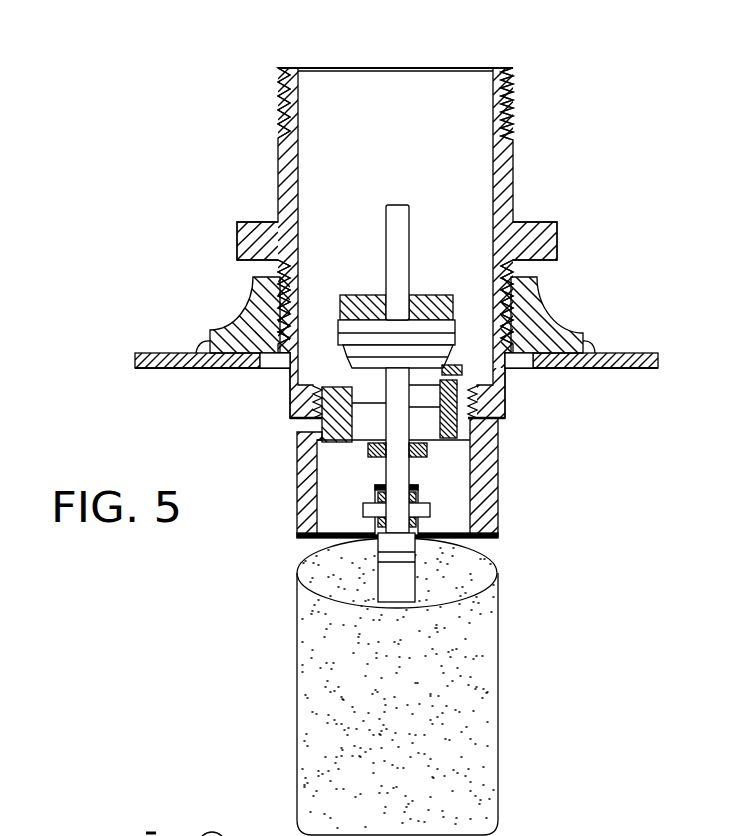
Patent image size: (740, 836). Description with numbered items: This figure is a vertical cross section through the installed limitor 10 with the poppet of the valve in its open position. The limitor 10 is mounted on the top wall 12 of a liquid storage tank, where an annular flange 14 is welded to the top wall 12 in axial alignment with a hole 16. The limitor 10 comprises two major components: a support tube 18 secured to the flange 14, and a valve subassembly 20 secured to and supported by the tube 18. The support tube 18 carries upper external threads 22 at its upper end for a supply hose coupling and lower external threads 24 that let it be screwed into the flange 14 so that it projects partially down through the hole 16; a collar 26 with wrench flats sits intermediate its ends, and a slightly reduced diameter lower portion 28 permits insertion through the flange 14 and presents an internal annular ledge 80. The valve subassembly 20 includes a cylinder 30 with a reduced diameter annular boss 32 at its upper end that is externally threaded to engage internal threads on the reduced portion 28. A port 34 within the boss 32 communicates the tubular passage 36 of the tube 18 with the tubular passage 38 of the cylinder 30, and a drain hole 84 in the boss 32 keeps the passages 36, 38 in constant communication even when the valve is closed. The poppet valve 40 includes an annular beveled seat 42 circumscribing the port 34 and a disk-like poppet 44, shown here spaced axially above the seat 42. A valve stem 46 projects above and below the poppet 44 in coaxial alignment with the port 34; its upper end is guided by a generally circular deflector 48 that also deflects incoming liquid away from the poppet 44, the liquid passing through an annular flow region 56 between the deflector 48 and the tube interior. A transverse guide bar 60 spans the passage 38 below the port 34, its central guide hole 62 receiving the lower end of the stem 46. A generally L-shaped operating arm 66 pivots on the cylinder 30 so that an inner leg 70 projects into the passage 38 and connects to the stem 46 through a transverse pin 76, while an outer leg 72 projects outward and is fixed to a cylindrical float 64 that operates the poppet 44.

The limitor 10 is at (442, 277).
The top wall 12 is at (645, 352).
The annular flange 14 is at (560, 318).
The hole 16 is at (517, 382).
The support tube 18 is at (516, 180).
The valve subassembly 20 is at (411, 488).
The upper external threads 22 is at (513, 88).
The lower external threads 24 is at (538, 283).
The collar 26 is at (557, 240).
The reduced diameter lower portion 28 is at (292, 376).
The cylinder 30 is at (300, 515).
The annular boss 32 is at (322, 397).
The port 34 is at (365, 418).
The tubular passage 36 is at (448, 90).
The tubular passage 38 is at (345, 528).
The poppet valve 40 is at (462, 352).
The beveled seat 42 is at (437, 388).
The poppet 44 is at (425, 333).
The valve stem 46 is at (395, 215).
The deflector 48 is at (346, 300).
The annular flow region 56 is at (316, 310).
The guide bar 60 is at (370, 447).
The guide hole 62 is at (382, 478).
The float 64 is at (490, 718).
The operating arm 66 is at (420, 562).
The inner leg 70 is at (422, 487).
The outer leg 72 is at (405, 580).
The transverse pin 76 is at (432, 512).
The annular ledge 80 is at (312, 390).
The drain hole 84 is at (498, 437).